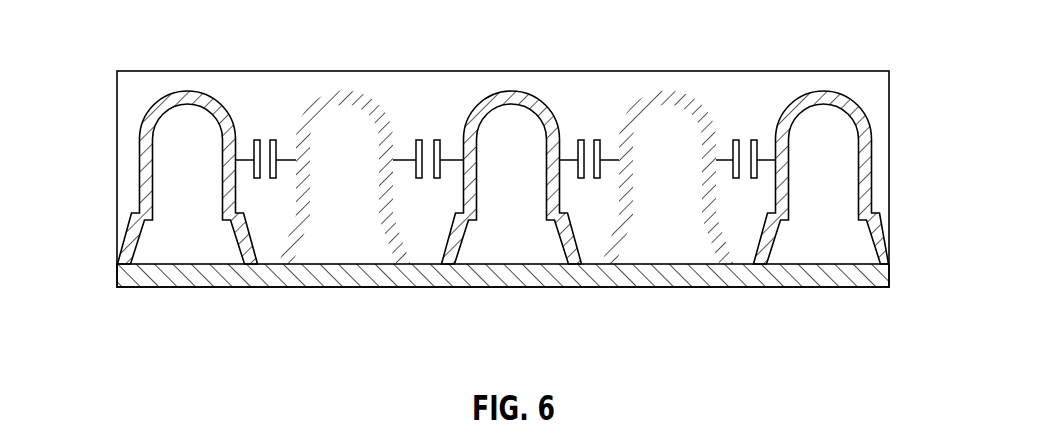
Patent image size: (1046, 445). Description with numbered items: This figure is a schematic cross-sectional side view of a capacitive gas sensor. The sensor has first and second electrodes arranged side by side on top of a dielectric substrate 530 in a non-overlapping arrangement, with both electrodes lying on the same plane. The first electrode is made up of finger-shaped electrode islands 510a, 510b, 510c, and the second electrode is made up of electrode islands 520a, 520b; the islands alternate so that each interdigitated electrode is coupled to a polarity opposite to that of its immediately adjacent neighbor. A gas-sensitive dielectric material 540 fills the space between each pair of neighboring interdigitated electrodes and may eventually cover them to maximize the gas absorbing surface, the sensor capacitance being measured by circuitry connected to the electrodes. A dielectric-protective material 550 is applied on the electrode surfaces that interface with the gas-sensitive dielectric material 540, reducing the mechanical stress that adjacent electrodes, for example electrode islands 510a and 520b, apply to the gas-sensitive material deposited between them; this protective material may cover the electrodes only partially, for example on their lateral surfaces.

The electrode island 510a is at (183, 253).
The electrode island 510b is at (508, 253).
The electrode island 510c is at (823, 253).
The electrode island 520a is at (345, 253).
The electrode island 520b is at (673, 253).
The dielectric substrate 530 is at (118, 277).
The gas-sensitive dielectric material 540 is at (126, 107).
The dielectric-protective material 550 is at (215, 85).